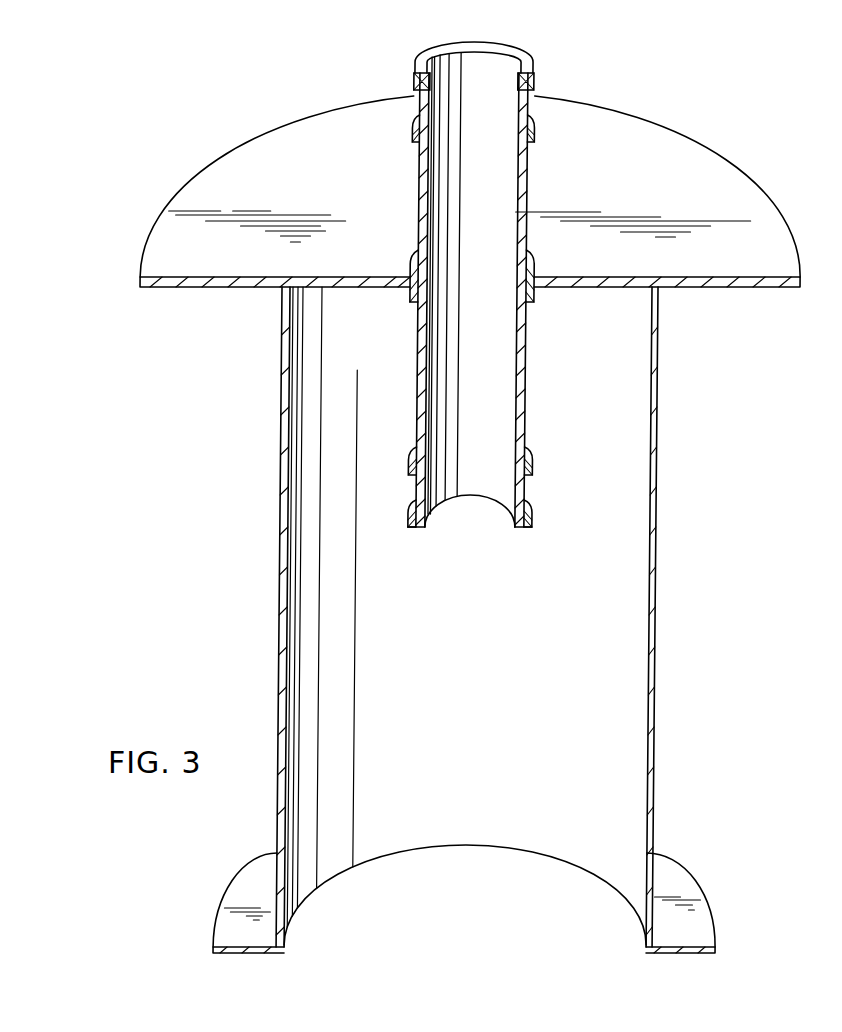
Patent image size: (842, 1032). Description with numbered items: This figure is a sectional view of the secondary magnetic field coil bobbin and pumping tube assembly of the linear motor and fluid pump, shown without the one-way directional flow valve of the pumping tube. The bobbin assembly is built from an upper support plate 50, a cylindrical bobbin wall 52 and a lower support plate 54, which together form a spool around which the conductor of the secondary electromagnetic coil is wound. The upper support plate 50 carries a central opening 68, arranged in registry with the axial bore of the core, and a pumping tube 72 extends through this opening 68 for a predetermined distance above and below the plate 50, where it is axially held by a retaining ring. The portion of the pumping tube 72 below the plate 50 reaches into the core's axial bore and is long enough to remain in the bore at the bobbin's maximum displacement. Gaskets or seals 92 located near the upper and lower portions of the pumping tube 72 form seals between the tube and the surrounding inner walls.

The upper support plate 50 is at (650, 119).
The bobbin wall 52 is at (656, 543).
The lower support plate 54 is at (688, 933).
The central opening 68 is at (534, 264).
The pumping tube 72 is at (527, 333).
The gaskets or seals 92 is at (533, 80).